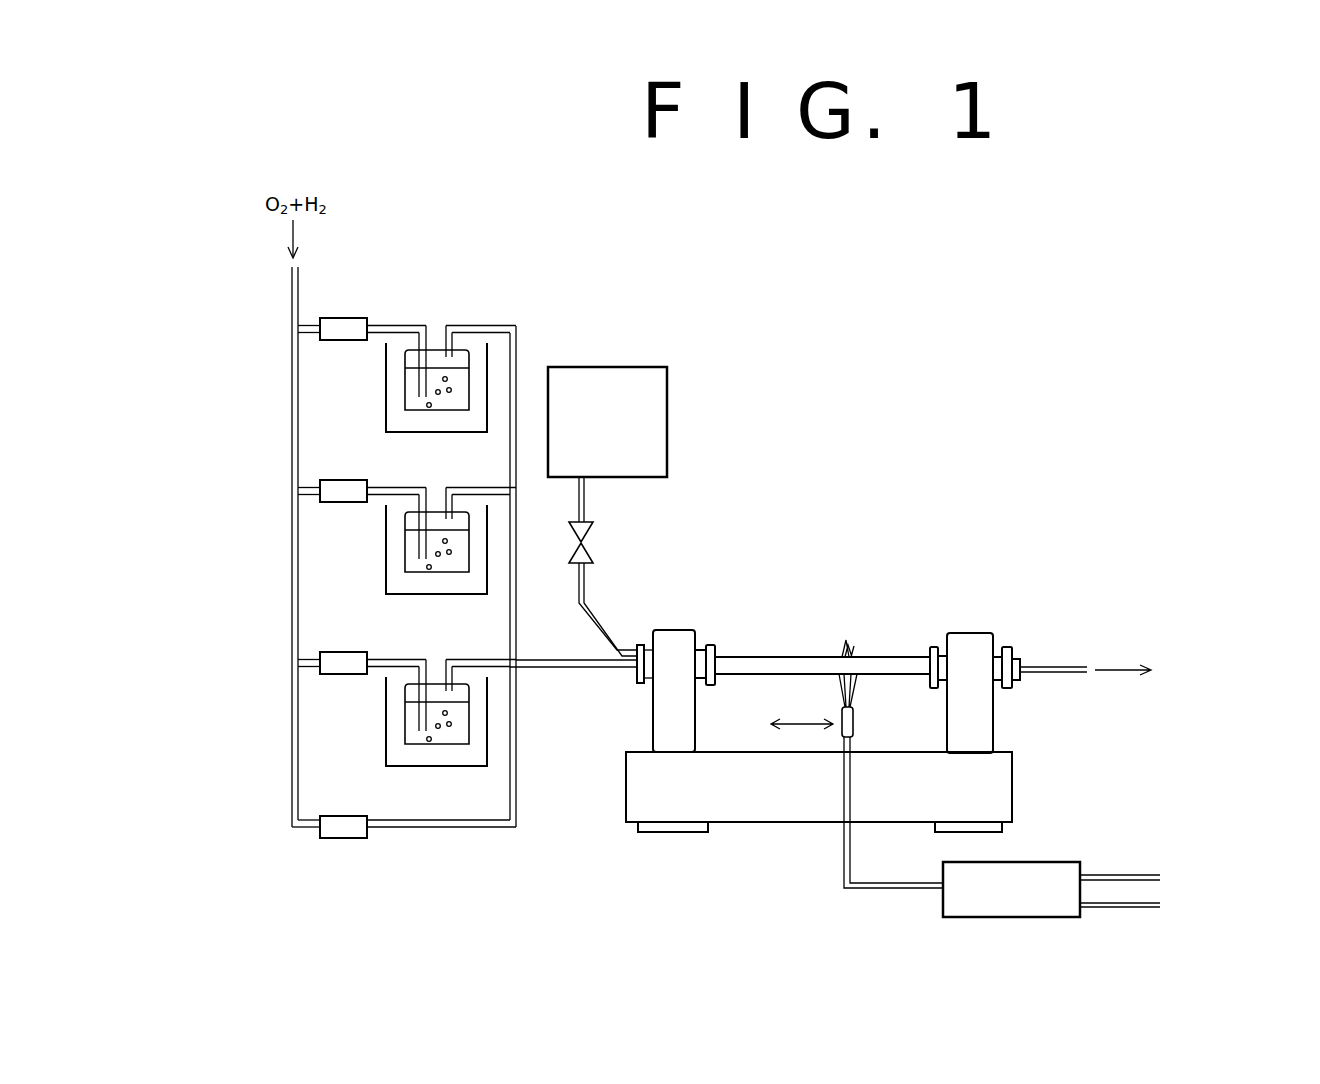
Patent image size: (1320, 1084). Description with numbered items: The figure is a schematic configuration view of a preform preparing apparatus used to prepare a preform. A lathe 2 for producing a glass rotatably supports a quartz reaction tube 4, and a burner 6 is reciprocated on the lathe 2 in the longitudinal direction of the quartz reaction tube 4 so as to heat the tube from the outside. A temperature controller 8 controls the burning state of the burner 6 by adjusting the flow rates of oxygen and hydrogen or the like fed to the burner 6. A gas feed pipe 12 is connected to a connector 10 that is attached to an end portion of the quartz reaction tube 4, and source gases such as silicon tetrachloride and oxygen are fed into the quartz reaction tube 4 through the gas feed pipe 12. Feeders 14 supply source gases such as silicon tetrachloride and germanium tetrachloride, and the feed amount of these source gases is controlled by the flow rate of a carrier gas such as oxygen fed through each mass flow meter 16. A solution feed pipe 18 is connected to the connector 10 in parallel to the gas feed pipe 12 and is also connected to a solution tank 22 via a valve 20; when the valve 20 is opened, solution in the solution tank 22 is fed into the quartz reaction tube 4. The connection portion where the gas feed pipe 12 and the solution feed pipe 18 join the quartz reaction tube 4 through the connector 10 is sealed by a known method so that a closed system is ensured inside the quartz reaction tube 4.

The lathe 2 is at (1012, 780).
The quartz reaction tube 4 is at (898, 662).
The burner 6 is at (855, 722).
The temperature controller 8 is at (1017, 920).
The connector 10 is at (640, 685).
The gas feed pipe 12 is at (562, 668).
The feeders 14 is at (441, 574).
The mass flow meter 16 is at (344, 589).
The solution feed pipe 18 is at (602, 623).
The valve 20 is at (592, 530).
The solution tank 22 is at (630, 365).